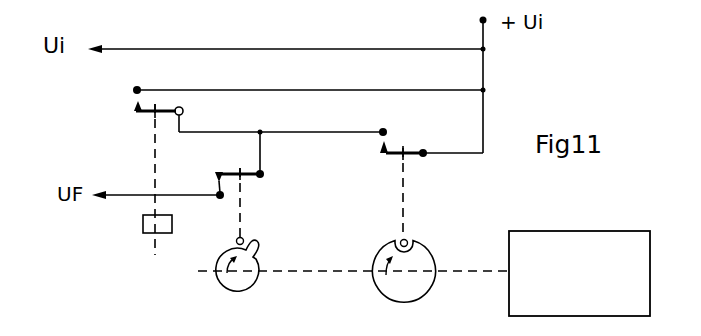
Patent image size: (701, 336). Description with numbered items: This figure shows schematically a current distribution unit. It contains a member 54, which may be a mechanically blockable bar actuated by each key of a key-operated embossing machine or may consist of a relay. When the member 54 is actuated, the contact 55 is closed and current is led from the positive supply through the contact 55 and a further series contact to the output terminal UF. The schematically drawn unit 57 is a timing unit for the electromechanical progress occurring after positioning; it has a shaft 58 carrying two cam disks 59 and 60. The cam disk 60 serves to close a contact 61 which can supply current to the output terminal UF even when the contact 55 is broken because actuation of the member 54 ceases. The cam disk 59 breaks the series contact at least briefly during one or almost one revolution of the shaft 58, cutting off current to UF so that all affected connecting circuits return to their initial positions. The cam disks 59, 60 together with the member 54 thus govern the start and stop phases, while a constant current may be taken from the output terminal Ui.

The member 54 is at (148, 228).
The contact 55 is at (134, 106).
The unit 57 is at (578, 248).
The shaft 58 is at (336, 274).
The cam disk 59 is at (249, 282).
The cam disk 60 is at (420, 280).
The contact 61 is at (407, 148).